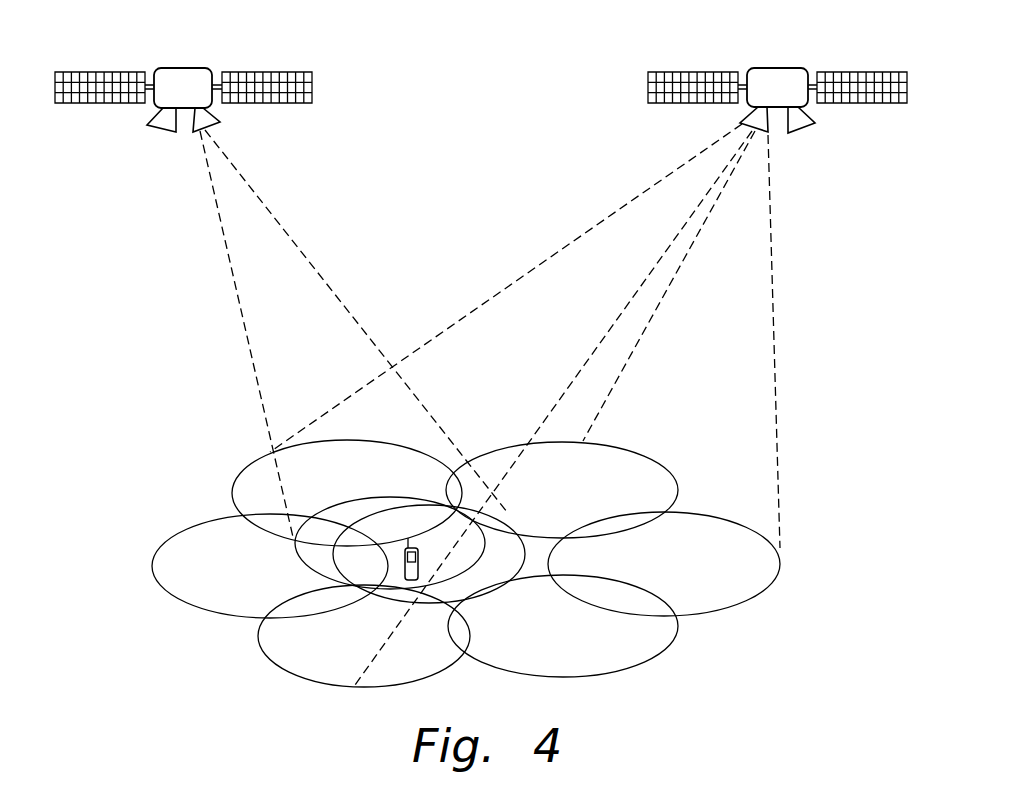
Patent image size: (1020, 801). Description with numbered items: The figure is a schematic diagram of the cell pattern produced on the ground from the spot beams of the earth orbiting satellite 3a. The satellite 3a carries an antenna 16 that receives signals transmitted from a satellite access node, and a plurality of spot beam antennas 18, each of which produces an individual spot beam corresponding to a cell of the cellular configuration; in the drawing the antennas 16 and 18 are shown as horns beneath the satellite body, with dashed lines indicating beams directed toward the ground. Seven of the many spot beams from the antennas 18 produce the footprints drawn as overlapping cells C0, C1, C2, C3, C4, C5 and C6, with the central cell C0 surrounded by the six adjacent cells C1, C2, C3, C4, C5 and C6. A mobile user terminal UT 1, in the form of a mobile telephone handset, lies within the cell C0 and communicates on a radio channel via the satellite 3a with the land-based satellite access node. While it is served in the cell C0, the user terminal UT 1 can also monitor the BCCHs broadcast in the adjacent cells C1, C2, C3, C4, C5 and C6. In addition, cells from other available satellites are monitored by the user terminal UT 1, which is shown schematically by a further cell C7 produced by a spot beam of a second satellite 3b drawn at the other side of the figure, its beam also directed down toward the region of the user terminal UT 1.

The earth orbiting satellite 3a is at (778, 68).
The satellite 3b is at (184, 68).
The antenna 16 is at (793, 133).
The spot beam antennas 18 is at (743, 117).
The cell C0 is at (429, 554).
The cell C1 is at (347, 493).
The cell C2 is at (562, 490).
The cell C3 is at (664, 564).
The cell C4 is at (563, 626).
The cell C5 is at (364, 636).
The cell C6 is at (270, 566).
The cell C7 is at (336, 508).
The mobile user terminal UT 1 is at (405, 566).